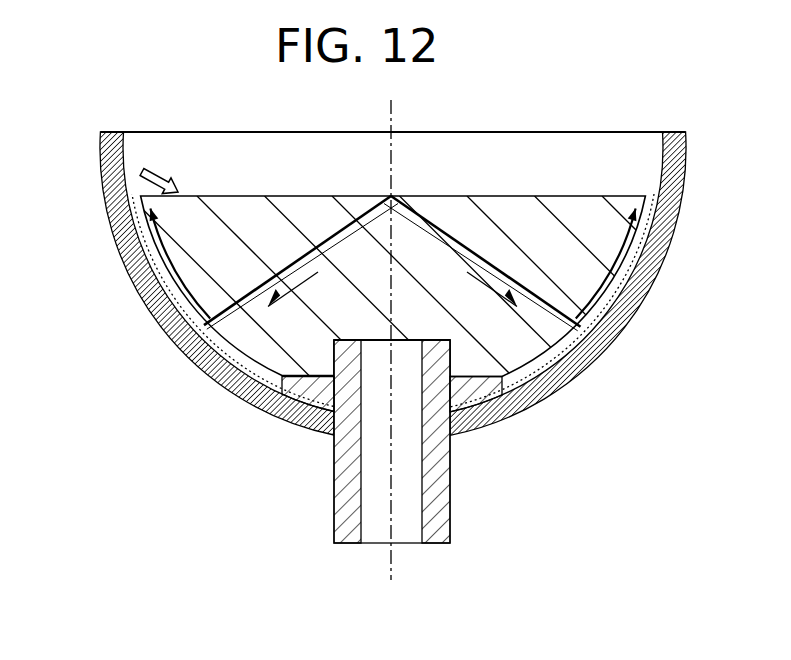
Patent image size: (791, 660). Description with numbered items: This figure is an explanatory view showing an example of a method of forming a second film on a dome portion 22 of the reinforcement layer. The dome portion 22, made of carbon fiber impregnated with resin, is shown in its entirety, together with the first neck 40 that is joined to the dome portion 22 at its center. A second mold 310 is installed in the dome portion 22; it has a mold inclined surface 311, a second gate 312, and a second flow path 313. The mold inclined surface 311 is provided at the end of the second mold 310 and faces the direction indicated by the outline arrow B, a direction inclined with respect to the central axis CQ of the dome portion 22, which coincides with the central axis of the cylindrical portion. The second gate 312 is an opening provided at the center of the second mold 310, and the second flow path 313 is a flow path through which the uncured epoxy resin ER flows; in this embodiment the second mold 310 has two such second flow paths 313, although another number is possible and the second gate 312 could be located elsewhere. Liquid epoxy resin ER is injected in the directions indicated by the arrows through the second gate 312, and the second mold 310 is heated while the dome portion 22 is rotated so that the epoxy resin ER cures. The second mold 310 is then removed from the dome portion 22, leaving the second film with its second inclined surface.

The dome portion 22 is at (177, 347).
The first neck 40 is at (334, 491).
The second mold 310 is at (590, 235).
The mold inclined surface 311 is at (114, 216).
The second gate 312 is at (402, 201).
The second flow path 313 is at (414, 218).
The epoxy resin ER is at (147, 306).
The outline arrow B is at (159, 166).
The central axis CQ is at (389, 358).